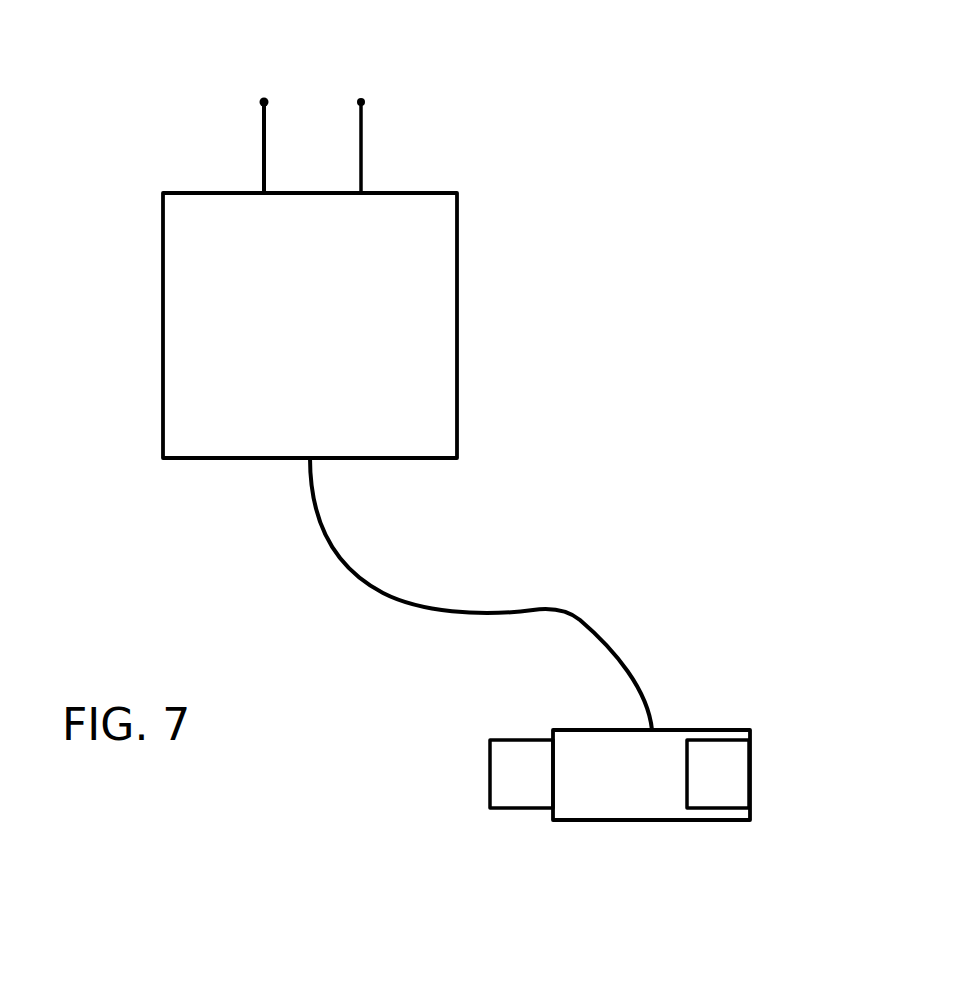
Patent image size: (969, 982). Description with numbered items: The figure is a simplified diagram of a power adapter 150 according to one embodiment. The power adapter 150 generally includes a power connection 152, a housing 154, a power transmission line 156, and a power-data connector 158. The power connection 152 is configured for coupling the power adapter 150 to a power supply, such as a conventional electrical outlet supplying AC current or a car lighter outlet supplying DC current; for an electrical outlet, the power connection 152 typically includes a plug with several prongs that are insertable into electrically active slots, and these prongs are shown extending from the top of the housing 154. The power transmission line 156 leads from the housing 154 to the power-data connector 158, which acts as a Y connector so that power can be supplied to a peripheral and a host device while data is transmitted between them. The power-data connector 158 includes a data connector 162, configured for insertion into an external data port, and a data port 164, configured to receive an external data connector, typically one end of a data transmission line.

The power adapter 150 is at (655, 148).
The power connection 152 is at (262, 103).
The housing 154 is at (457, 365).
The power transmission line 156 is at (577, 617).
The power-data connector 158 is at (700, 730).
The data connector 162 is at (528, 773).
The data port 164 is at (725, 773).